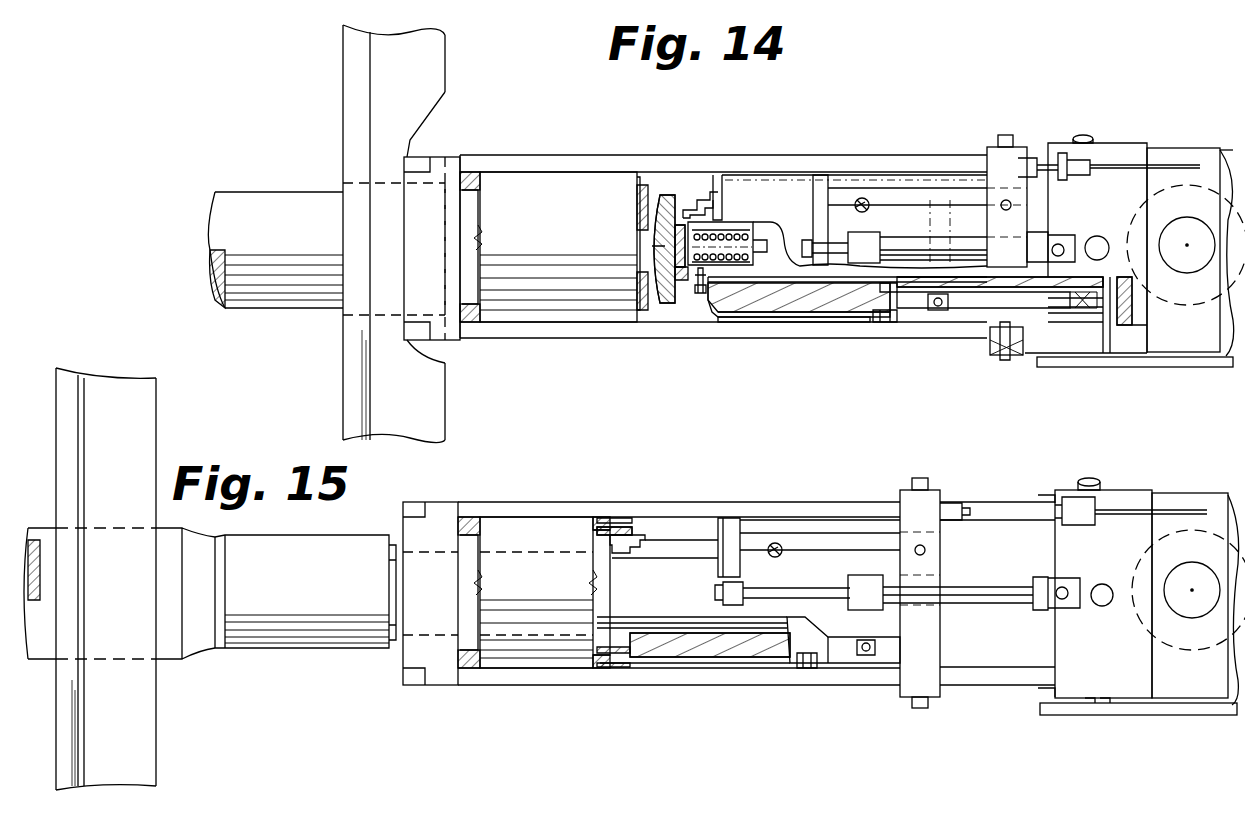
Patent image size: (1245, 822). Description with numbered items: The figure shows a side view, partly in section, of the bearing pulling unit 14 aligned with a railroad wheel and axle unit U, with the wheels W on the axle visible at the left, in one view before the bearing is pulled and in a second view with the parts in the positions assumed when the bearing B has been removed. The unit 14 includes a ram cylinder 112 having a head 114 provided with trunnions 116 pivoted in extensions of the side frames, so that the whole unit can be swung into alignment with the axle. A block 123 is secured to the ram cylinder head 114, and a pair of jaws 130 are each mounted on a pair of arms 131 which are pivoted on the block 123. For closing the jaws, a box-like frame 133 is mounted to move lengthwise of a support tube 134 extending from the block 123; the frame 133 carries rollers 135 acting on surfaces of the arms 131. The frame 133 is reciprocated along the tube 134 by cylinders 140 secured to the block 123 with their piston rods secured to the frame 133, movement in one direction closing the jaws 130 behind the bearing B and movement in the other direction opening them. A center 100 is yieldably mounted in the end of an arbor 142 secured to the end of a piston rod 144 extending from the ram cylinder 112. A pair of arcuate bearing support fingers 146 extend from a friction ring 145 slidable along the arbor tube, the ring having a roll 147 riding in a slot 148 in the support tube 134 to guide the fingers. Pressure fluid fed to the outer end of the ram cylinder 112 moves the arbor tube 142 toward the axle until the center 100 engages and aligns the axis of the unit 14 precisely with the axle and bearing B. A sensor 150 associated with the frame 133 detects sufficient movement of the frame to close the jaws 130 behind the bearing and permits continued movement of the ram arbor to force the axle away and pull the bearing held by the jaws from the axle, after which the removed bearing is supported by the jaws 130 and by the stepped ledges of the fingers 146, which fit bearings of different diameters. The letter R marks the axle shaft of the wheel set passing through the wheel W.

In FIG. 14, the wheels W is at (395, 62).
In FIG. 15, the wheels W is at (155, 437).
In FIG. 14, the shaft R is at (345, 136).
In FIG. 14, the wheel and axle unit U is at (197, 237).
In FIG. 15, the wheel and axle unit U is at (47, 515).
In FIG. 14, the bearing B is at (565, 162).
In FIG. 15, the bearing B is at (558, 508).
In FIG. 14, the bearing pulling unit 14 is at (813, 152).
In FIG. 15, the bearing pulling unit 14 is at (811, 491).
In FIG. 14, the center 100 is at (655, 245).
In FIG. 15, the center 100 is at (385, 605).
In FIG. 14, the ram cylinder 112 is at (1233, 160).
In FIG. 15, the ram cylinder 112 is at (1236, 520).
In FIG. 14, the head 114 is at (1160, 148).
In FIG. 15, the head 114 is at (1172, 493).
In FIG. 14, the trunnions 116 is at (1175, 220).
In FIG. 15, the trunnions 116 is at (1192, 612).
In FIG. 14, the block 123 is at (1105, 143).
In FIG. 15, the block 123 is at (1115, 490).
In FIG. 14, the jaws 130 is at (425, 278).
In FIG. 15, the jaws 130 is at (442, 688).
In FIG. 14, the arms 131 is at (510, 328).
In FIG. 15, the arms 131 is at (492, 680).
In FIG. 14, the box-like frame 133 is at (1000, 148).
In FIG. 15, the box-like frame 133 is at (928, 497).
In FIG. 14, the support tube 134 is at (755, 190).
In FIG. 15, the support tube 134 is at (809, 547).
In FIG. 14, the roller 135 is at (990, 332).
In FIG. 14, the cylinders 140 is at (903, 230).
In FIG. 15, the cylinders 140 is at (977, 606).
In FIG. 14, the arbor 142 is at (752, 300).
In FIG. 15, the arbor 142 is at (672, 642).
In FIG. 14, the piston rod 144 is at (1128, 355).
In FIG. 15, the piston rod 144 is at (1138, 706).
In FIG. 14, the friction ring 145 is at (897, 318).
In FIG. 14, the bearing support fingers 146 is at (700, 190).
In FIG. 15, the bearing support fingers 146 is at (628, 560).
In FIG. 14, the roll 147 is at (880, 318).
In FIG. 15, the roll 147 is at (812, 672).
In FIG. 14, the slot 148 is at (782, 320).
In FIG. 15, the slot 148 is at (787, 670).
In FIG. 14, the sensor 150 is at (1075, 155).
In FIG. 15, the sensor 150 is at (1131, 501).